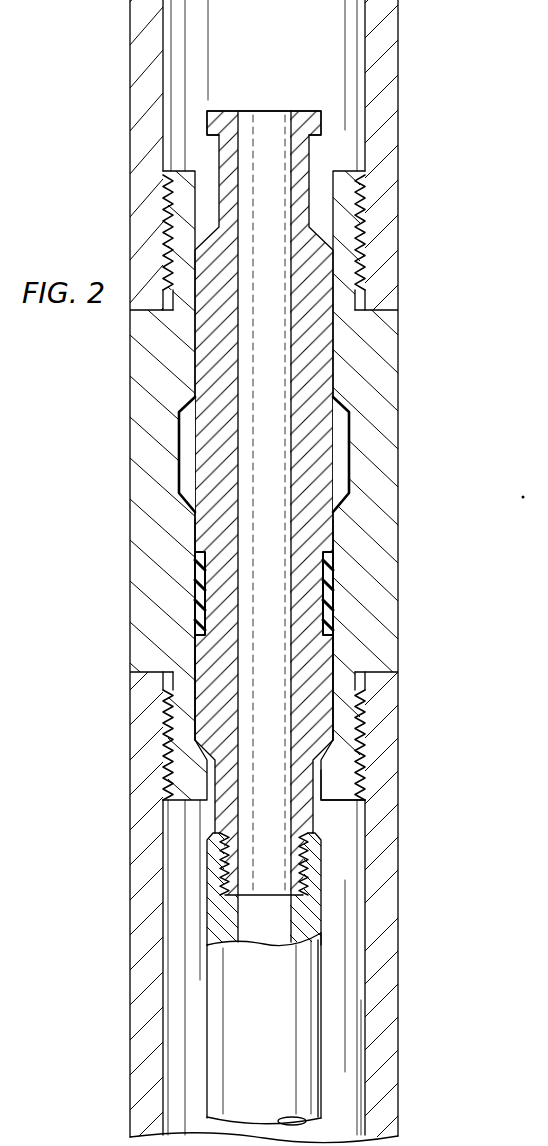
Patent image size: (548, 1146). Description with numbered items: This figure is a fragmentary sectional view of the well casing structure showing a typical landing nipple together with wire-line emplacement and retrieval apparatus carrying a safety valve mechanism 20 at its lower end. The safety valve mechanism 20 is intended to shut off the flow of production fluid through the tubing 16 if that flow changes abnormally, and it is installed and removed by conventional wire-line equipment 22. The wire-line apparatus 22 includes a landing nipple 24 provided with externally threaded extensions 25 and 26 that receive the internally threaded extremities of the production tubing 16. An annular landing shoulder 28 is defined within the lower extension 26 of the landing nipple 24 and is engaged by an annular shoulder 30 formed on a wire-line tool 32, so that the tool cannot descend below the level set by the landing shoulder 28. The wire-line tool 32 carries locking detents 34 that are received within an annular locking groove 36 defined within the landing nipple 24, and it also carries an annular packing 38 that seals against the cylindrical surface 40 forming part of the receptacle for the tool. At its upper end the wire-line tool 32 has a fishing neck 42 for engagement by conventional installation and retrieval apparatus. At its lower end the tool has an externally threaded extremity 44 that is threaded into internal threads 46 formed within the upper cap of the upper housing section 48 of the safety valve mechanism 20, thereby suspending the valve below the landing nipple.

The tubing 16 is at (390, 753).
The safety valve mechanism 20 is at (327, 967).
The wire-line equipment 22 is at (405, 334).
The landing nipple 24 is at (388, 539).
The externally threaded extension 25 is at (347, 228).
The externally threaded extension 26 is at (350, 717).
The annular landing shoulder 28 is at (207, 752).
The annular shoulder 30 is at (352, 768).
The wire-line tool 32 is at (318, 377).
The locking detents 34 is at (187, 440).
The annular locking groove 36 is at (348, 461).
The packing 38 is at (197, 588).
The cylindrical surface 40 is at (195, 652).
The fishing neck 42 is at (219, 146).
The lower externally threaded extremity 44 is at (320, 867).
The internal threads 46 is at (230, 862).
The upper housing section 48 is at (220, 926).